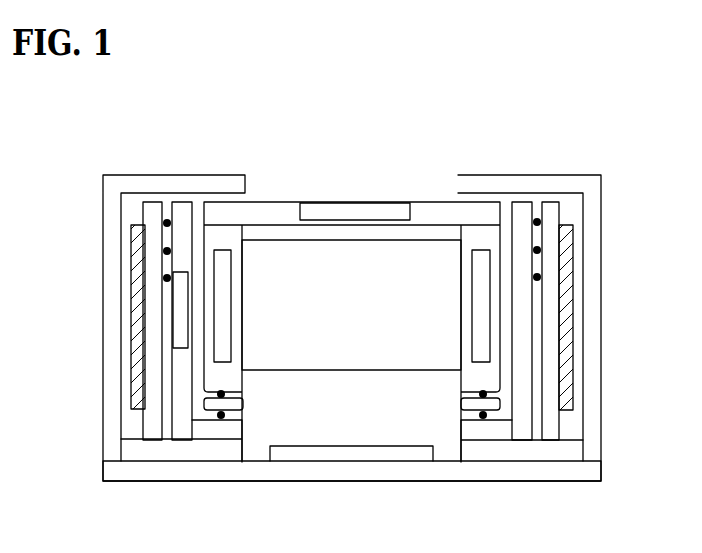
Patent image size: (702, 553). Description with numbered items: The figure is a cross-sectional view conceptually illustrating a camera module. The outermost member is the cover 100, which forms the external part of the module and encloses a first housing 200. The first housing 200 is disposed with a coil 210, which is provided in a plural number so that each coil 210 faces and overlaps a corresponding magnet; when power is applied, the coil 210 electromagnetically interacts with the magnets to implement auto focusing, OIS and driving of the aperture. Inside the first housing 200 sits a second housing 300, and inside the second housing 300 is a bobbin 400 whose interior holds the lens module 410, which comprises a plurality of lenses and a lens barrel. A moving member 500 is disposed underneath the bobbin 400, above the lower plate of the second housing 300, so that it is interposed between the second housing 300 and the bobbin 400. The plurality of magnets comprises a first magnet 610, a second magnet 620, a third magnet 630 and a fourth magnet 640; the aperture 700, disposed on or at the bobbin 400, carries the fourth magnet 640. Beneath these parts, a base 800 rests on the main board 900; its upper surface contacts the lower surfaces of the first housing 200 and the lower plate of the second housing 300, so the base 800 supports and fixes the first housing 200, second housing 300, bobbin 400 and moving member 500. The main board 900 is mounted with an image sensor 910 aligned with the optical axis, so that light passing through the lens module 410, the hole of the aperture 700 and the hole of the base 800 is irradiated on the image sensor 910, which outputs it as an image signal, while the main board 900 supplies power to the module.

The cover 100 is at (161, 182).
The first housing 200 is at (150, 370).
The coil 210 is at (133, 286).
The second housing 300 is at (176, 213).
The bobbin 400 is at (216, 235).
The lens module 410 is at (413, 251).
The moving member 500 is at (493, 408).
The first magnet 610 is at (180, 322).
The second magnet 620 is at (227, 251).
The third magnet 630 is at (483, 292).
The fourth magnet 640 is at (384, 203).
The aperture 700 is at (467, 212).
The base 800 is at (138, 450).
The main board 900 is at (223, 468).
The image sensor 910 is at (415, 452).